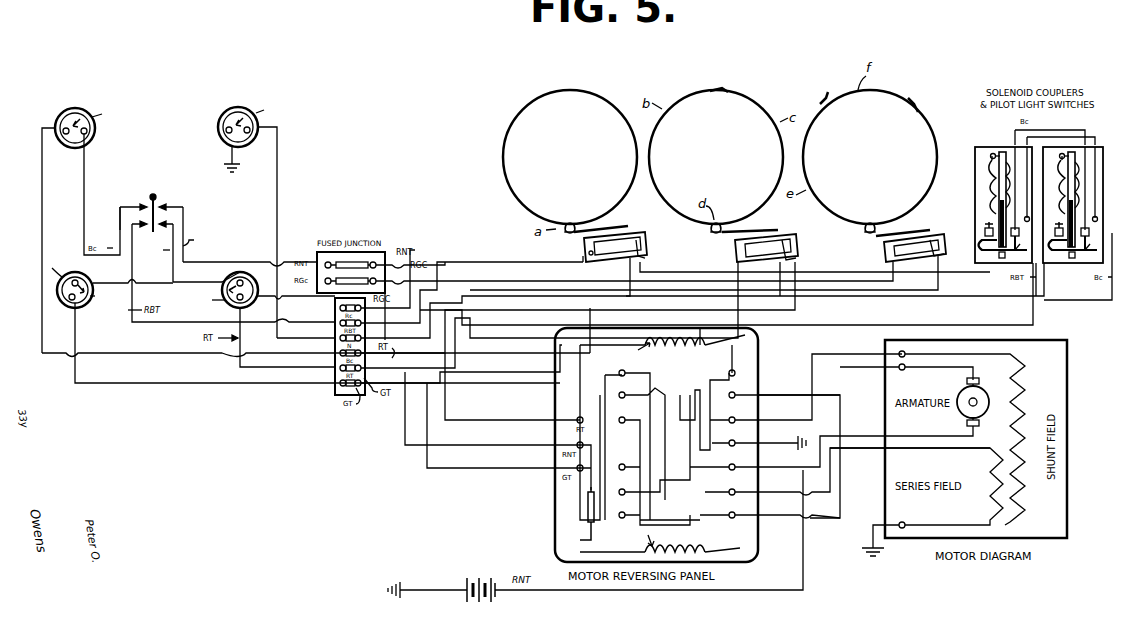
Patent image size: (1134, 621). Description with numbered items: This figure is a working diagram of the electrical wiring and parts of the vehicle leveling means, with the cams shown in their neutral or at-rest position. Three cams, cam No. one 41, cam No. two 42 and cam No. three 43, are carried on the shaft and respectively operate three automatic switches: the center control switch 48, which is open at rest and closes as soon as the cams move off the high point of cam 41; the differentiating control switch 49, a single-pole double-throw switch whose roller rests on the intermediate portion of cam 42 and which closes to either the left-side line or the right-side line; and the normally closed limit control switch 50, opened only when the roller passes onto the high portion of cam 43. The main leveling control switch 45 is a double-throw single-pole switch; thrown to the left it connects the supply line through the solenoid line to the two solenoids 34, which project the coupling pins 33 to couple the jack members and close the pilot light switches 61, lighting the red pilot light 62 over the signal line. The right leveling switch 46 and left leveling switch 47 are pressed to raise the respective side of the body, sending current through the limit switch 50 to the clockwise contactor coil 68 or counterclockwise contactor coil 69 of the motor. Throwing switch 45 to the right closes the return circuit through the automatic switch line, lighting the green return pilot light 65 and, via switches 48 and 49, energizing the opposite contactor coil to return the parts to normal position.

The pilot light 62 is at (70, 115).
The return pilot light 65 is at (226, 115).
The main leveling control switch 45 is at (168, 221).
The left leveling switch 47 is at (62, 302).
The right leveling switch 46 is at (258, 296).
The cam No. 1 41 is at (585, 100).
The cam No. 2 42 is at (745, 103).
The cam No. 3 43 is at (900, 100).
The center control switch 48 is at (652, 252).
The differentiating control switch 49 is at (802, 244).
The limit control switch 50 is at (946, 242).
The coupling pins 33 is at (998, 178).
The solenoids 34 is at (1002, 158).
The pilot light switch 61 is at (1016, 248).
The clockwise contactor coil 68 is at (745, 335).
The counterclockwise contactor coil 69 is at (745, 550).